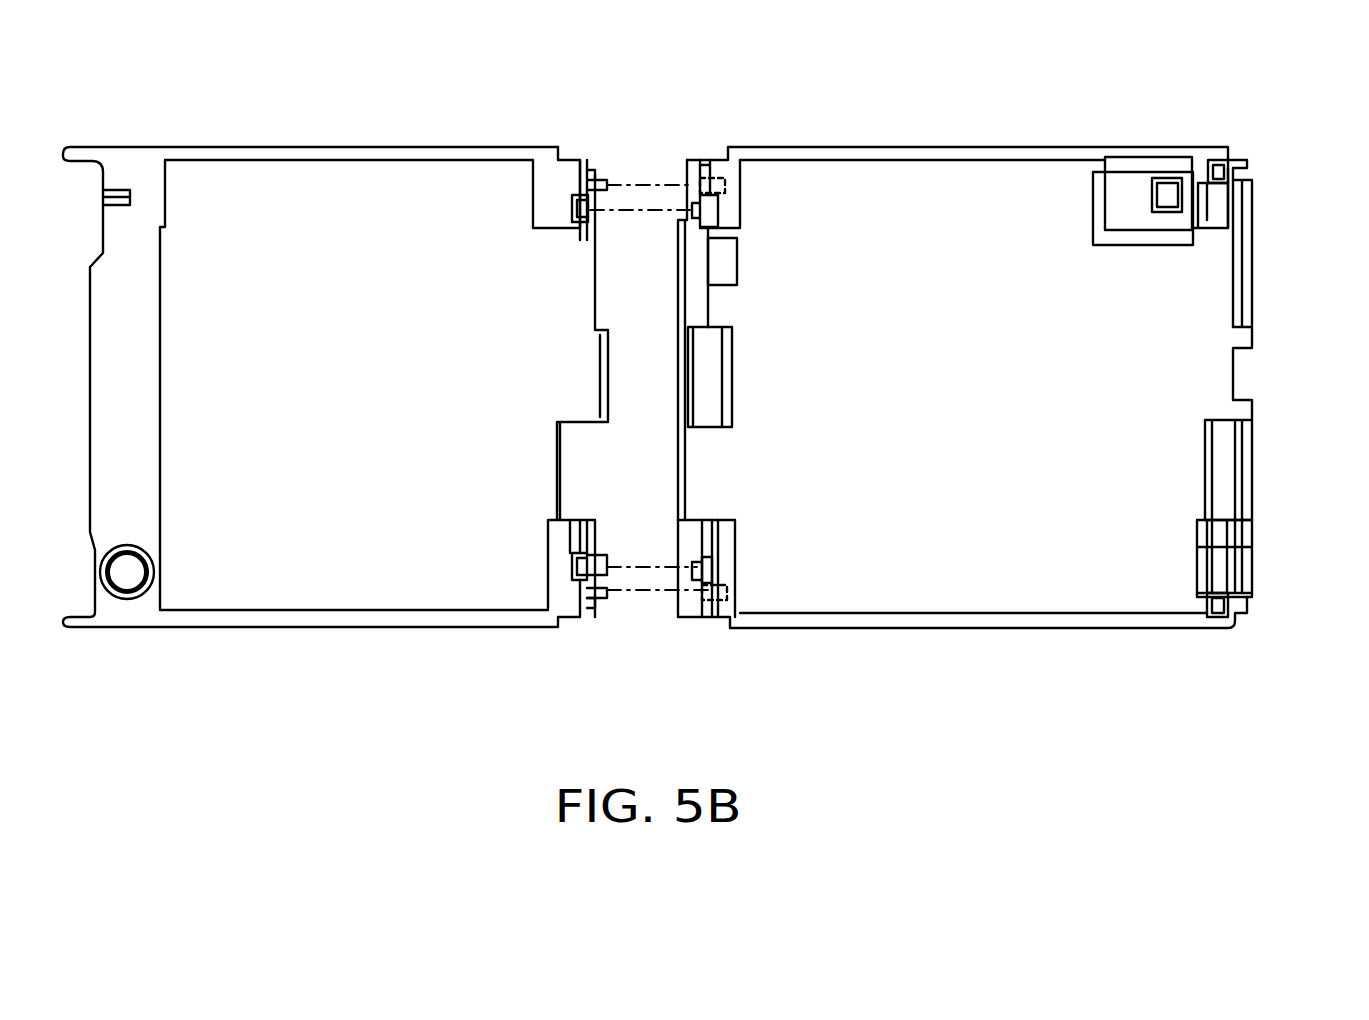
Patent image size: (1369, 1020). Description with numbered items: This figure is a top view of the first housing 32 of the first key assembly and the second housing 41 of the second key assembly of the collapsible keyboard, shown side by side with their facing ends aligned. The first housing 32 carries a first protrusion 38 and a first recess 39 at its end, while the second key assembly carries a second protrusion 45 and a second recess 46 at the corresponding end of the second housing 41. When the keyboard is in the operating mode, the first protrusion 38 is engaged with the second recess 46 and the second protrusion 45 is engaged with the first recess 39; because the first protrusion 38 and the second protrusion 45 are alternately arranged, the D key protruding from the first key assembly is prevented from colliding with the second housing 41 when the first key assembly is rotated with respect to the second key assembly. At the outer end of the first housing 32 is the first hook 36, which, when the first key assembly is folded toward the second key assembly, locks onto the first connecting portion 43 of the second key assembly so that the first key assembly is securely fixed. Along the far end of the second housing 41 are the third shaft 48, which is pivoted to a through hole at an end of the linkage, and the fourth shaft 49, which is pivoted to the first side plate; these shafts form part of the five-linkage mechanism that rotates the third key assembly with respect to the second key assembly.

The first housing 32 is at (345, 195).
The first hook 36 is at (118, 195).
The first protrusion 38 is at (590, 176).
The first recess 39 is at (568, 210).
The second housing 41 is at (945, 195).
The first connecting portion 43 is at (1168, 195).
The second protrusion 45 is at (693, 178).
The second recess 46 is at (722, 190).
The third shaft 48 is at (1238, 548).
The fourth shaft 49 is at (1247, 598).